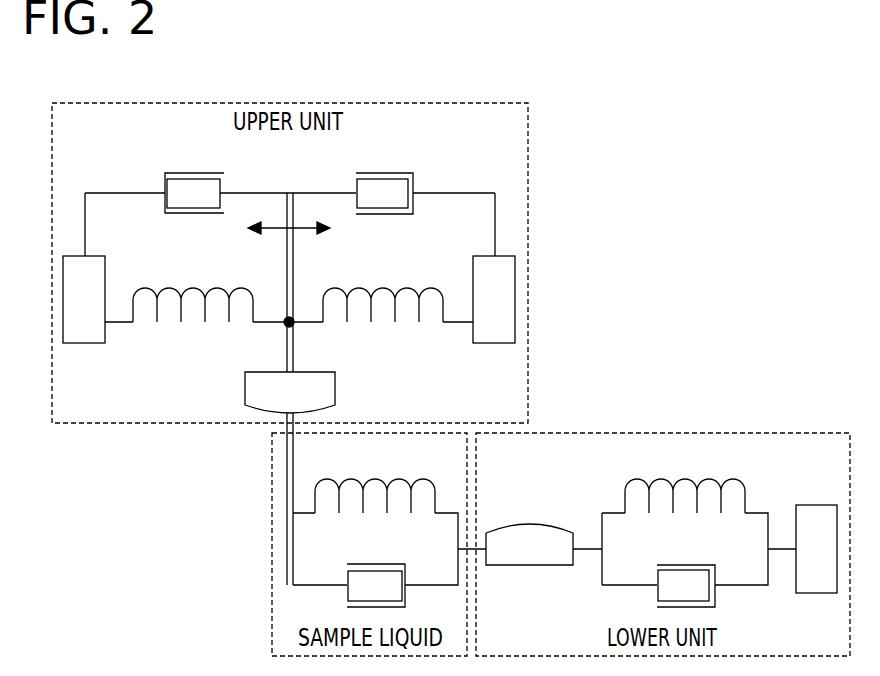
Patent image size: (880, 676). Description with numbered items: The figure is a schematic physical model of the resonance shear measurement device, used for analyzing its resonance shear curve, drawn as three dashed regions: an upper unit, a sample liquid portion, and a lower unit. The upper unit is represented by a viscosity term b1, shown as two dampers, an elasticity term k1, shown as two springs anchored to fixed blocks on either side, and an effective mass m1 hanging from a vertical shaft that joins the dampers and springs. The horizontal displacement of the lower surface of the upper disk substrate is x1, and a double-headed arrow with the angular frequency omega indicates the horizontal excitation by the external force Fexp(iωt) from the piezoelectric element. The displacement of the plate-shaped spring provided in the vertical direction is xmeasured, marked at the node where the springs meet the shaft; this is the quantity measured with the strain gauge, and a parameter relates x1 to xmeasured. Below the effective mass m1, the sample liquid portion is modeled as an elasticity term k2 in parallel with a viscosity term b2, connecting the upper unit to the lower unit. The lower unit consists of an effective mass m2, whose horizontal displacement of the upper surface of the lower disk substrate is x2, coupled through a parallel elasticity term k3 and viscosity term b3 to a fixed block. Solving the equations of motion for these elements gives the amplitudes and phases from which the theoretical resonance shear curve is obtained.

The viscosity term of the upper unit b1 is at (289, 180).
The elasticity term of the upper unit k1 is at (288, 291).
The effective mass of the upper unit m1 is at (290, 392).
The horizontal displacement of the lower surface of the upper disk substrate x1 is at (349, 393).
The displacement of the plate-shaped spring xmeasured is at (335, 337).
The angular frequency of the external force omega is at (300, 229).
The elasticity term of the sample liquid portion k2 is at (375, 484).
The viscosity term of the sample liquid portion b2 is at (376, 573).
The effective mass of the lower unit m2 is at (529, 544).
The horizontal displacement of the upper surface of the lower disk substrate x2 is at (527, 510).
The elasticity term of the lower unit k3 is at (685, 484).
The viscosity term of the lower unit b3 is at (686, 574).